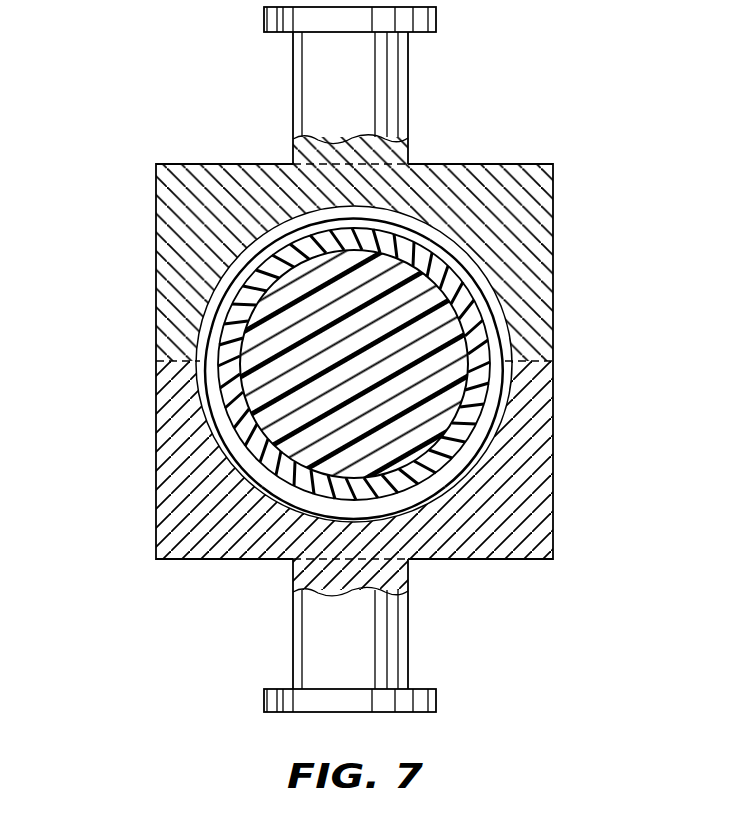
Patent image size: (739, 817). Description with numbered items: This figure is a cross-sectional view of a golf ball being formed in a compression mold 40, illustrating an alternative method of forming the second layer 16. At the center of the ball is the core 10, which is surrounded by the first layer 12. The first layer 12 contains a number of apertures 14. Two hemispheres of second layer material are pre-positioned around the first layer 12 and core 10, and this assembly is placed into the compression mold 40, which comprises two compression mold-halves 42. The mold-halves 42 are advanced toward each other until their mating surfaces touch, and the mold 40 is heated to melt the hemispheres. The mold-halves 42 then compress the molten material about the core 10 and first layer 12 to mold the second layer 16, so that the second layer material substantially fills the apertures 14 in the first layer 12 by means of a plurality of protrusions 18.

The core 10 is at (440, 350).
The first layer 12 is at (475, 320).
The apertures 14 is at (470, 262).
The second layer 16 is at (490, 293).
The protrusions 18 is at (427, 222).
The compression mold 40 is at (95, 290).
The compression mold-halves 42 is at (477, 163).